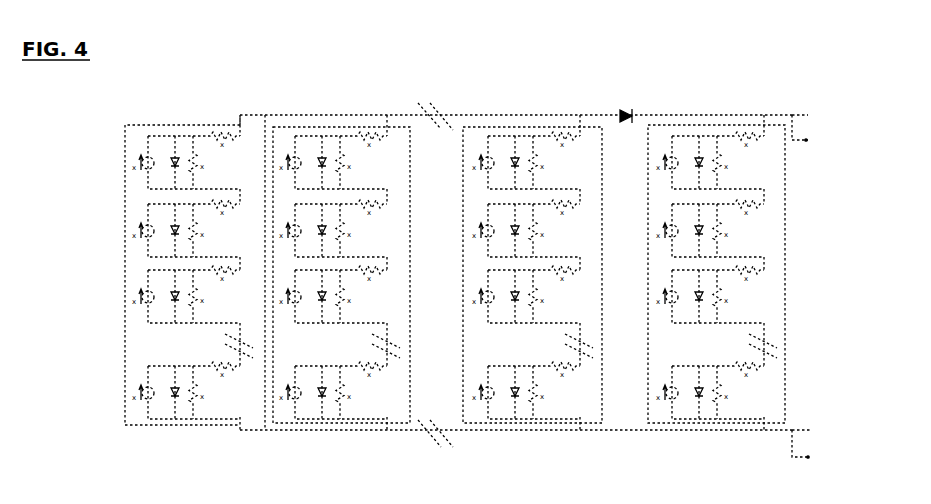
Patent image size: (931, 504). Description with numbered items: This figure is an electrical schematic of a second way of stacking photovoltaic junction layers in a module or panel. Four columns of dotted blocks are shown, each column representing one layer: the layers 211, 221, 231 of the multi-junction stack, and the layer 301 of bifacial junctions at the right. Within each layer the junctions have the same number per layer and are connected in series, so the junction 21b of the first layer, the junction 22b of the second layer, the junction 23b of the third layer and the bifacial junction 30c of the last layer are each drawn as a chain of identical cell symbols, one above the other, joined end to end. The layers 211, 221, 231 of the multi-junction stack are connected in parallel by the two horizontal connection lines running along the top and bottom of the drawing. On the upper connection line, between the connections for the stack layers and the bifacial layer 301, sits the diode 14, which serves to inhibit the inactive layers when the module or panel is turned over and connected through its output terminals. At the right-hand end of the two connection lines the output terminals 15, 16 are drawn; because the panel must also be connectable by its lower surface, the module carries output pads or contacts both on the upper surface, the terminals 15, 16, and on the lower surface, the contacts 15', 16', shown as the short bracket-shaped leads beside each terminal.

The layer 211 is at (168, 93).
The layer 221 is at (338, 100).
The layer 231 is at (511, 103).
The fourth solar cell string 301 is at (725, 100).
The junction 21b is at (117, 150).
The junction 22b is at (283, 143).
The junction 23b is at (462, 160).
The junction 30c is at (645, 167).
The diode 14 is at (626, 112).
The output terminal 15 is at (825, 412).
The lower-surface output contact 15' is at (843, 439).
The output terminal 16 is at (818, 97).
The lower-surface output contact 16' is at (833, 116).